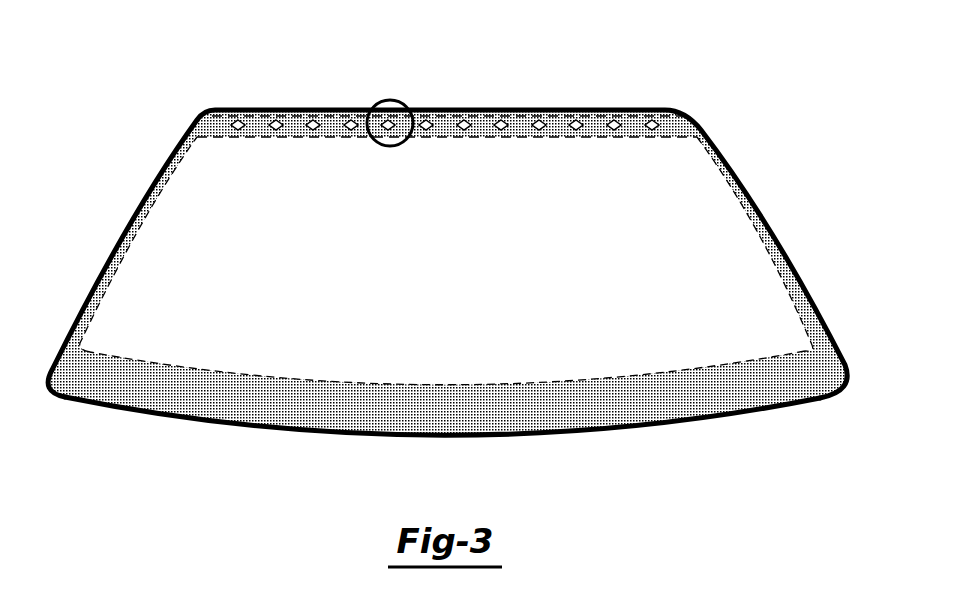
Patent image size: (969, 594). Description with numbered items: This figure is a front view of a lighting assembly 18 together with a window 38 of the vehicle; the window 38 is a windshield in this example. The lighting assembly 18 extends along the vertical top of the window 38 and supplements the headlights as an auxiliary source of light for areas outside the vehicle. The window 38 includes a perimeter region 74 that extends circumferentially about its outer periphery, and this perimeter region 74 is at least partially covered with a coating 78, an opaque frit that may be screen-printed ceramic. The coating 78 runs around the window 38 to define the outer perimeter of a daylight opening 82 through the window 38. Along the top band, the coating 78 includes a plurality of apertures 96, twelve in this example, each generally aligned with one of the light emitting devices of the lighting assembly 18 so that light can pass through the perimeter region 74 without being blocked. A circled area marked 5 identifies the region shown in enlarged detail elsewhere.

The detail view region (FIG. 5) 5 is at (386, 100).
The lighting assembly 18 is at (557, 118).
The apertures 96 is at (588, 114).
The daylight opening 82 is at (712, 98).
The window 38 is at (730, 252).
The perimeter region 74 is at (745, 392).
The coating 78 is at (610, 430).